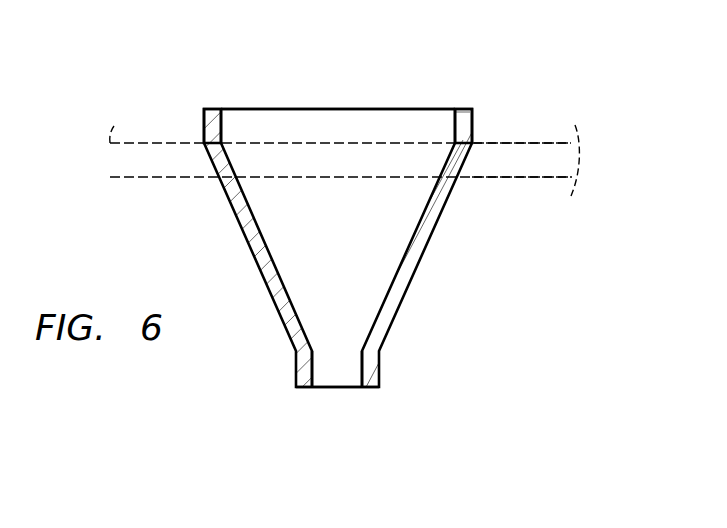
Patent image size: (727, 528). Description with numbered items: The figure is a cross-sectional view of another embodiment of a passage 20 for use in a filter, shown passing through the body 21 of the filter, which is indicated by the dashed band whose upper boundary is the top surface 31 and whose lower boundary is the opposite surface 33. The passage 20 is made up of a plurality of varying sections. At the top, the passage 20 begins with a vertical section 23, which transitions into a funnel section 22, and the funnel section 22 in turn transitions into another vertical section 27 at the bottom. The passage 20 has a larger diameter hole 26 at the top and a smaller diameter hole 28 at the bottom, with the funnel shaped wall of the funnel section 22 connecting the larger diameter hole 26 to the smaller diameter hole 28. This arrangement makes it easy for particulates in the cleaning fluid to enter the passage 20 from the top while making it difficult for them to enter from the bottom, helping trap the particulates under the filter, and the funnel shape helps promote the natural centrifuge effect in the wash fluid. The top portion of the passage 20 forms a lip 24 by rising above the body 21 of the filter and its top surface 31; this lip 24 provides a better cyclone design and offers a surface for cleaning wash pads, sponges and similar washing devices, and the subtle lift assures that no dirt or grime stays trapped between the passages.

The passage 20 is at (458, 62).
The body 21 is at (554, 156).
The funnel section 22 is at (428, 250).
The vertical section 23 is at (472, 123).
The lip 24 is at (204, 118).
The larger diameter hole 26 is at (343, 108).
The vertical section 27 is at (340, 362).
The smaller diameter hole 28 is at (338, 387).
The top surface 31 is at (530, 143).
The lower surface of substrate 33 is at (524, 177).